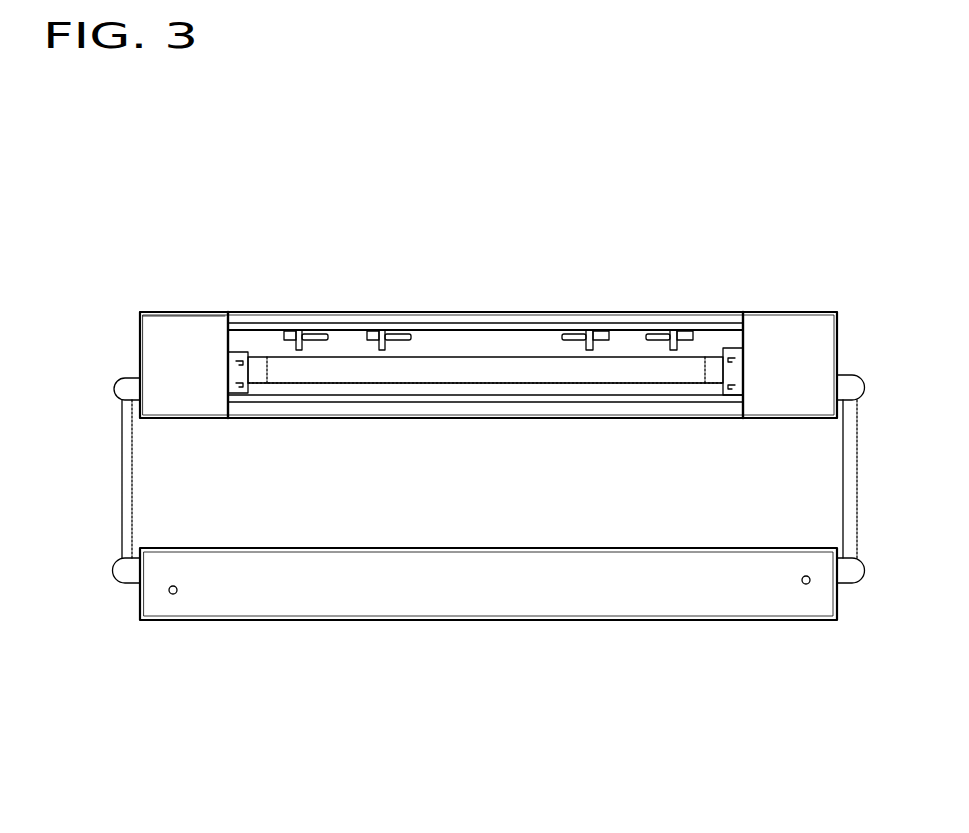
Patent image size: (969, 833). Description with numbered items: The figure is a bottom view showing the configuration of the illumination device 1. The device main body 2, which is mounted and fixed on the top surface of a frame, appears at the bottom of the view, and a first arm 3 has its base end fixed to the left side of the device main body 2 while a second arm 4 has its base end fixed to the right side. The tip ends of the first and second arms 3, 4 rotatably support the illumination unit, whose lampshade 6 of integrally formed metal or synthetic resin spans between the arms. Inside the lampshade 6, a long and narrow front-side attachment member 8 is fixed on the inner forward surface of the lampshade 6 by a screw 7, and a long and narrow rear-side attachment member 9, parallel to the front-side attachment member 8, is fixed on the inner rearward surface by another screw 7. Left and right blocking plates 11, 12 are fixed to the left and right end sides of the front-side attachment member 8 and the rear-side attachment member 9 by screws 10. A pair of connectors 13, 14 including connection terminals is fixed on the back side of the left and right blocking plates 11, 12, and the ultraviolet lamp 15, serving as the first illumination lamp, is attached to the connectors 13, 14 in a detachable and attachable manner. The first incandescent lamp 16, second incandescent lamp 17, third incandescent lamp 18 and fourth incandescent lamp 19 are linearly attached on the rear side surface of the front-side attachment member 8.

The illumination device 1 is at (186, 219).
The device main body 2 is at (494, 600).
The first arm 3 is at (127, 482).
The second arm 4 is at (850, 468).
The lampshade 6 is at (806, 312).
The screw 7 is at (468, 318).
The front-side attachment member 8 is at (633, 320).
The rear-side attachment member 9 is at (550, 410).
The screw 10 is at (152, 318).
The left blocking plate 11 is at (197, 318).
The right blocking plate 12 is at (783, 320).
The connector 13 is at (250, 400).
The connector 14 is at (740, 400).
The ultraviolet lamp 15 is at (410, 370).
The first incandescent lamp 16 is at (310, 320).
The second incandescent lamp 17 is at (392, 320).
The third incandescent lamp 18 is at (593, 320).
The fourth incandescent lamp 19 is at (677, 320).